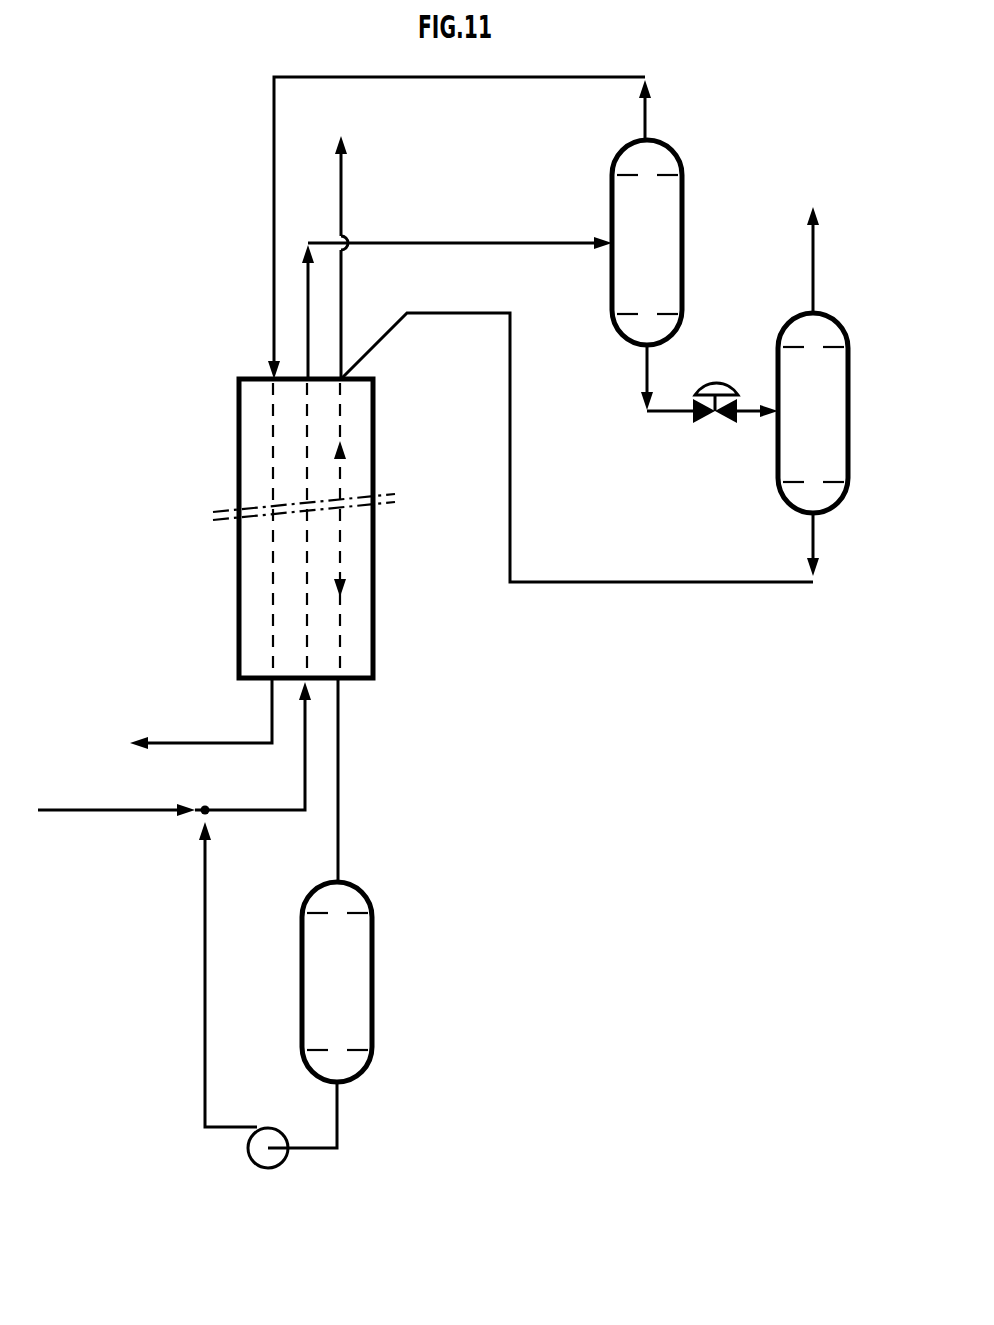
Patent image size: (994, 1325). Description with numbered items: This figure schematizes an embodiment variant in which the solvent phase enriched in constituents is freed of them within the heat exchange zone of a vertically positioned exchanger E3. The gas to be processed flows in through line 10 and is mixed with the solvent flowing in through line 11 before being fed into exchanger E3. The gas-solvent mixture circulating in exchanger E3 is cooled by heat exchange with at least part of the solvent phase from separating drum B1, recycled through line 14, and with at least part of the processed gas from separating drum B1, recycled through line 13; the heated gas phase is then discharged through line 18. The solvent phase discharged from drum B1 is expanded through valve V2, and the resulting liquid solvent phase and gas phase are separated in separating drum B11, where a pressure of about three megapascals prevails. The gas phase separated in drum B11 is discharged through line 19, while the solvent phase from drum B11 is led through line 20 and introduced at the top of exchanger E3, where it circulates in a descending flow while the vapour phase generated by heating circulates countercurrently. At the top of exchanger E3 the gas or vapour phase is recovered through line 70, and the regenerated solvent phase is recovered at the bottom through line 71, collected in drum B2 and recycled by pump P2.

The line 10 is at (133, 813).
The line 11 is at (204, 1009).
The line 13 is at (543, 78).
The line 14 is at (665, 414).
The line 18 is at (200, 739).
The line 19 is at (817, 243).
The line 20 is at (678, 580).
The line 70 is at (341, 172).
The line 71 is at (340, 771).
The exchanger E3 is at (299, 528).
The separating drum B1 is at (663, 265).
The separating drum B11 is at (835, 430).
The drum B2 is at (353, 1002).
The valve V2 is at (715, 388).
The pump P2 is at (268, 1131).